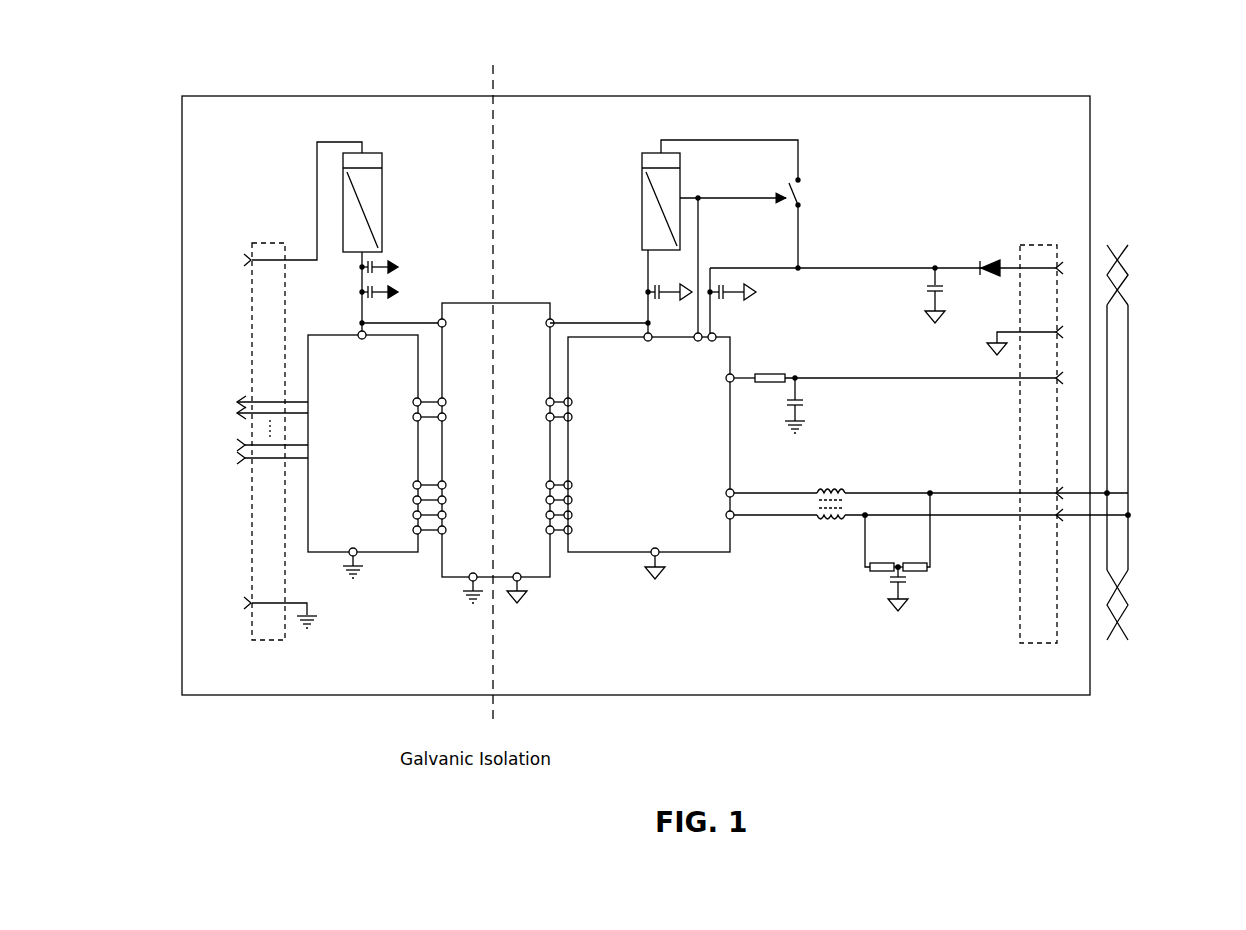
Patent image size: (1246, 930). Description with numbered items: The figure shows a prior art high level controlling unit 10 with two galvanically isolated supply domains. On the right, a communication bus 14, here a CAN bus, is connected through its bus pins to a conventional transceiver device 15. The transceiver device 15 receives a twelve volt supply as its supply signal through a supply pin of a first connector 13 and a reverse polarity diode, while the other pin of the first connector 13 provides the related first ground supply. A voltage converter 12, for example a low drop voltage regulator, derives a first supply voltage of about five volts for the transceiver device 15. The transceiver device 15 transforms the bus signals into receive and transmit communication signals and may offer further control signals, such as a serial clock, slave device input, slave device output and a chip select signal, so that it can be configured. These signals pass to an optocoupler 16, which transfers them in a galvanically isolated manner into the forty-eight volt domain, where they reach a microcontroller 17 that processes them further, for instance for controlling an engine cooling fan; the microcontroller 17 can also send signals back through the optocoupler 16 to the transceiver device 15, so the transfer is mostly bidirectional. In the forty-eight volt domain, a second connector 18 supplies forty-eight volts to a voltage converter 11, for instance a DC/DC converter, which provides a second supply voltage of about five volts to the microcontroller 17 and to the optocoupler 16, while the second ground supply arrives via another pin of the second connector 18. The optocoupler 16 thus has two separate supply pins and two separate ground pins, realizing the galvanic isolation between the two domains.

The high level controlling unit 10 is at (181, 122).
The voltage converter 11 is at (377, 151).
The voltage converter 12 is at (647, 150).
The first connector 13 is at (1062, 352).
The communication bus 14 is at (1119, 415).
The transceiver device 15 is at (733, 556).
The optocoupler 16 is at (553, 581).
The microcontroller 17 is at (411, 556).
The second connector 18 is at (250, 526).